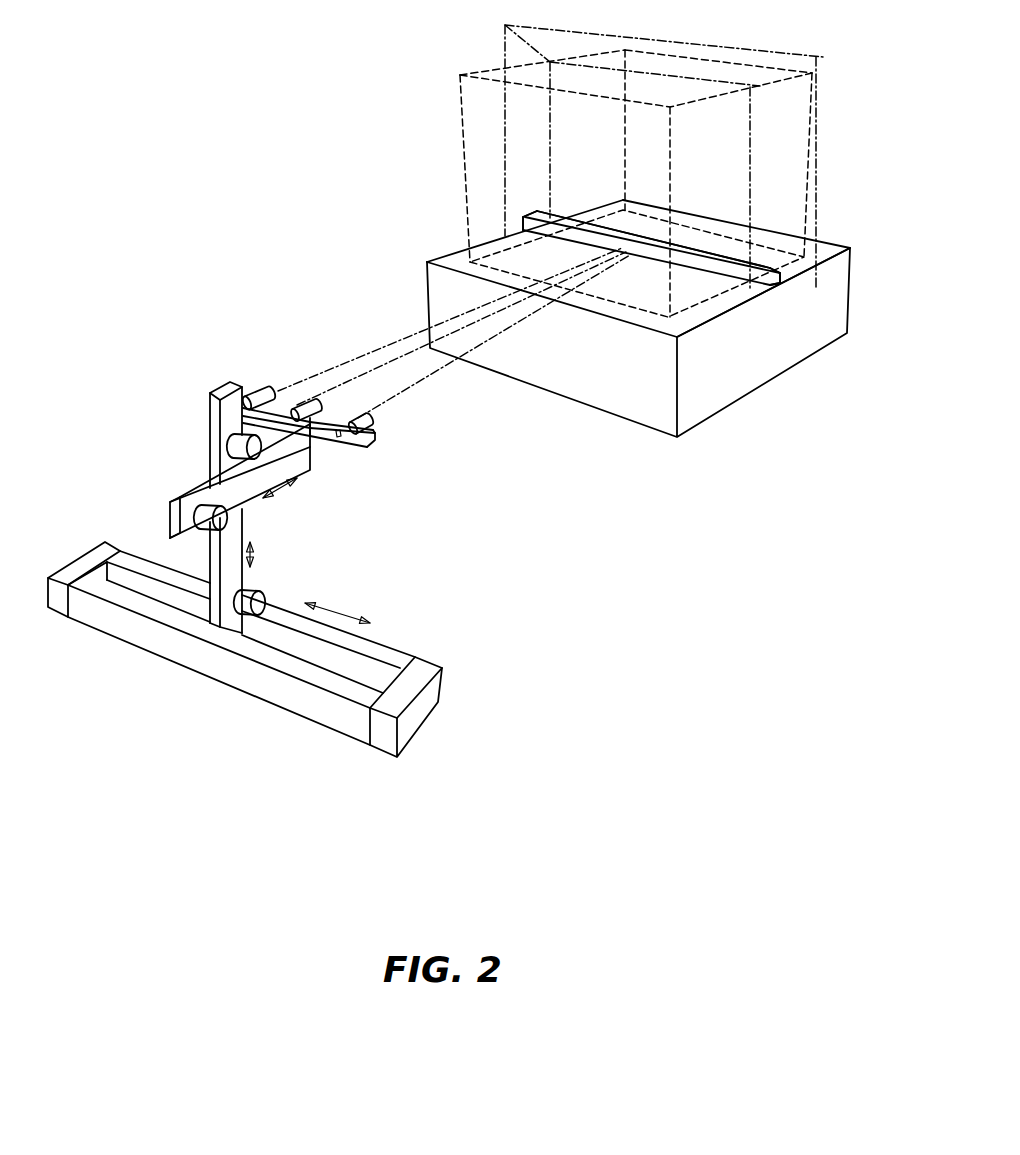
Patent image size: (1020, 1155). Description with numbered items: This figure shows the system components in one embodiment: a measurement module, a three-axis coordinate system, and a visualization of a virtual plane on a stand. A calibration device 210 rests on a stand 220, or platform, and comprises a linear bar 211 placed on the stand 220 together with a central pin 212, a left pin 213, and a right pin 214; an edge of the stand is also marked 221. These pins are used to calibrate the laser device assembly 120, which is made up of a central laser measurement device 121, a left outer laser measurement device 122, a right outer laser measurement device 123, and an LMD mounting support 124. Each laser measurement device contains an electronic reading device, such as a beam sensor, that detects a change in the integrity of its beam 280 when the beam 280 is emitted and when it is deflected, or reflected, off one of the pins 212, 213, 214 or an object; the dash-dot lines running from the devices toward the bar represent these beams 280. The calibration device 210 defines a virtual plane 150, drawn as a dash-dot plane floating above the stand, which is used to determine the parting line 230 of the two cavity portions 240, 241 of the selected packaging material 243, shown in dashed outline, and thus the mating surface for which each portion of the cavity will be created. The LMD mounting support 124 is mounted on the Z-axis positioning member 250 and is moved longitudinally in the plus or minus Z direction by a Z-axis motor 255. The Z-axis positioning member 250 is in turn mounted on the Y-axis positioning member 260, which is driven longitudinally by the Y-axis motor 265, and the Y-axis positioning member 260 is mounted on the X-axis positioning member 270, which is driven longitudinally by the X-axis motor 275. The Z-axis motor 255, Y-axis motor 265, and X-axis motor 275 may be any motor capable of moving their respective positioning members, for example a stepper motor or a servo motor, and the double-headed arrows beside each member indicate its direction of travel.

The virtual plane 150 is at (503, 25).
The parting line 230 is at (707, 80).
The cavity portion 240 is at (667, 58).
The cavity portion 241 is at (525, 70).
The selected packaging material 243 is at (460, 105).
The stand 220 is at (695, 404).
The front top edge of base 221 is at (446, 262).
The linear bar 211 is at (750, 300).
The calibration device 210 is at (569, 232).
The central pin 212 is at (650, 232).
The left pin 213 is at (530, 212).
The right pin 214 is at (773, 262).
The beam 280 is at (438, 370).
The laser device assembly 120 is at (340, 440).
The central laser measurement device 121 is at (310, 423).
The left outer laser measurement device 122 is at (253, 390).
The right outer laser measurement device 123 is at (373, 418).
The LMD mounting support 124 is at (382, 437).
The Z-axis positioning member 250 is at (197, 482).
The Z-axis motor 255 is at (233, 452).
The Y-axis positioning member 260 is at (247, 523).
The Y-axis motor 265 is at (210, 545).
The X-axis motor 275 is at (267, 587).
The X-axis positioning member 270 is at (393, 643).